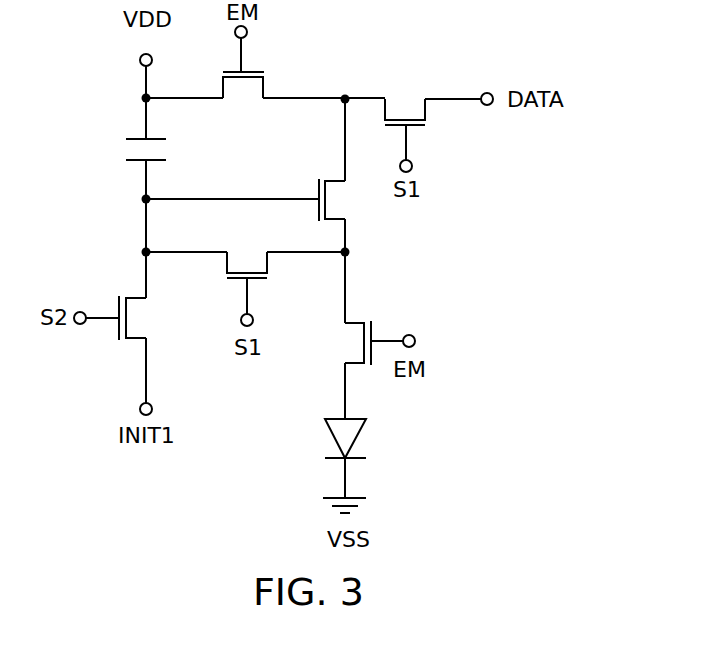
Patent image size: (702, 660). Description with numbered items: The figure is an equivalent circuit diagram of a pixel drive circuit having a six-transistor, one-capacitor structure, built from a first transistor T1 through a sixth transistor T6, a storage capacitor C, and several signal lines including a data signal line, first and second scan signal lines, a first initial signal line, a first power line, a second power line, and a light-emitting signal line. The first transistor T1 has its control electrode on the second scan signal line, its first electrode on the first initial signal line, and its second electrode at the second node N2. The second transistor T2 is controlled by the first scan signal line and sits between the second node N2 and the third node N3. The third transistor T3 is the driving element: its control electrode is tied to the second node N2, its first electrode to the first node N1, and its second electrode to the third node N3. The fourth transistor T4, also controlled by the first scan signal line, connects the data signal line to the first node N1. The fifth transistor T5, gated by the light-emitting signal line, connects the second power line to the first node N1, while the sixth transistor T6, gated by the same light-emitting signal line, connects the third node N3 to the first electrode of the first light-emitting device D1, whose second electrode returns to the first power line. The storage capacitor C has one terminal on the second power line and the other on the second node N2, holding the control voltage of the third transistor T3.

The first transistor T1 is at (122, 318).
The second transistor T2 is at (247, 275).
The third transistor T3 is at (343, 200).
The fourth transistor T4 is at (405, 116).
The fifth transistor T5 is at (243, 79).
The sixth transistor T6 is at (363, 343).
The storage capacitor C is at (132, 149).
The first light-emitting device D1 is at (371, 438).
The first node N1 is at (340, 79).
The second node N2 is at (123, 226).
The third node N3 is at (367, 255).